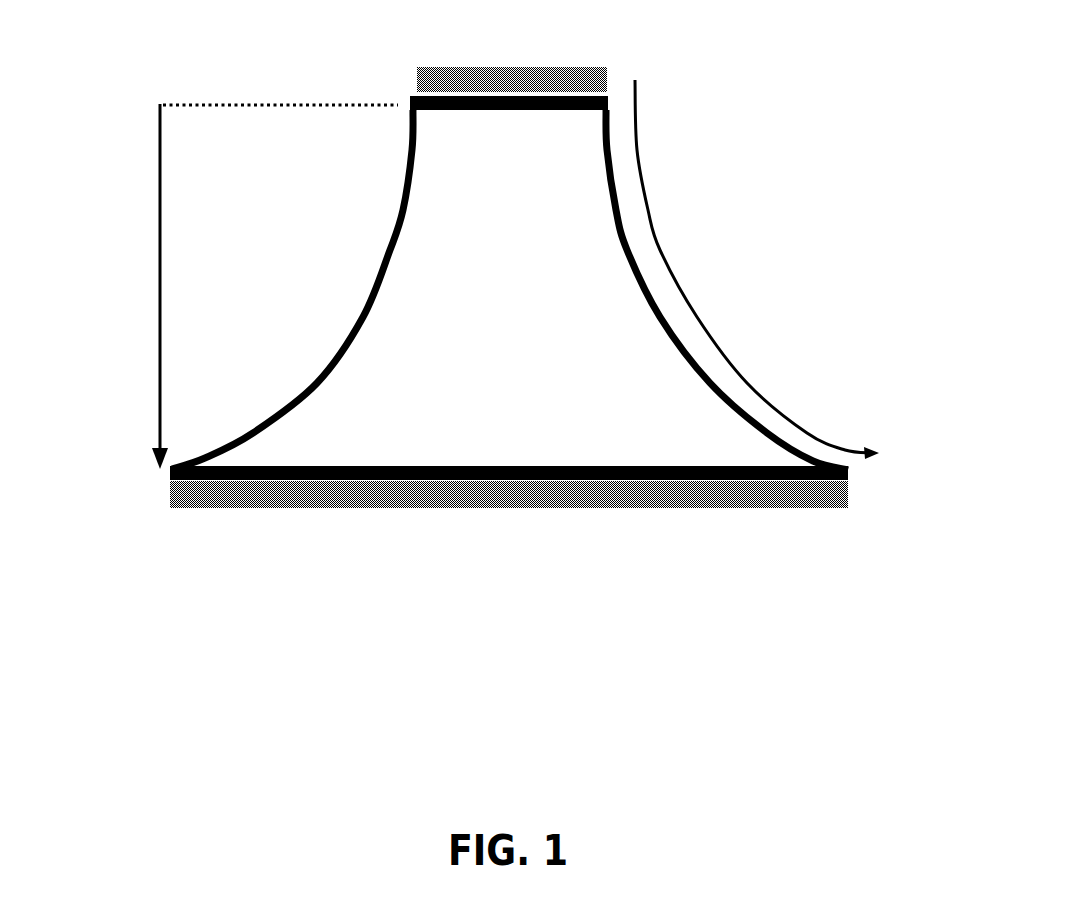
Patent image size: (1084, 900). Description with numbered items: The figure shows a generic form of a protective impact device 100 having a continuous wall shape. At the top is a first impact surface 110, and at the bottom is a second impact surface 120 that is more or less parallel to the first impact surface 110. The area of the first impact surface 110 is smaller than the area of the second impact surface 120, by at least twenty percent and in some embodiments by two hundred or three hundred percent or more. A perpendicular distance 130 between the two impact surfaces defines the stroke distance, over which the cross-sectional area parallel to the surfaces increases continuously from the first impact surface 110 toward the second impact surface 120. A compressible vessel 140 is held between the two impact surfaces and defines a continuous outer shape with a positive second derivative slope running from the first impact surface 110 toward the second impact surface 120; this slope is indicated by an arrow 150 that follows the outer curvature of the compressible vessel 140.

The protective impact device 100 is at (328, 577).
The first impact surface 110 is at (418, 84).
The second impact surface 120 is at (848, 492).
The perpendicular distance 130 is at (162, 158).
The compressible vessel 140 is at (330, 263).
The arrow 150 is at (657, 222).